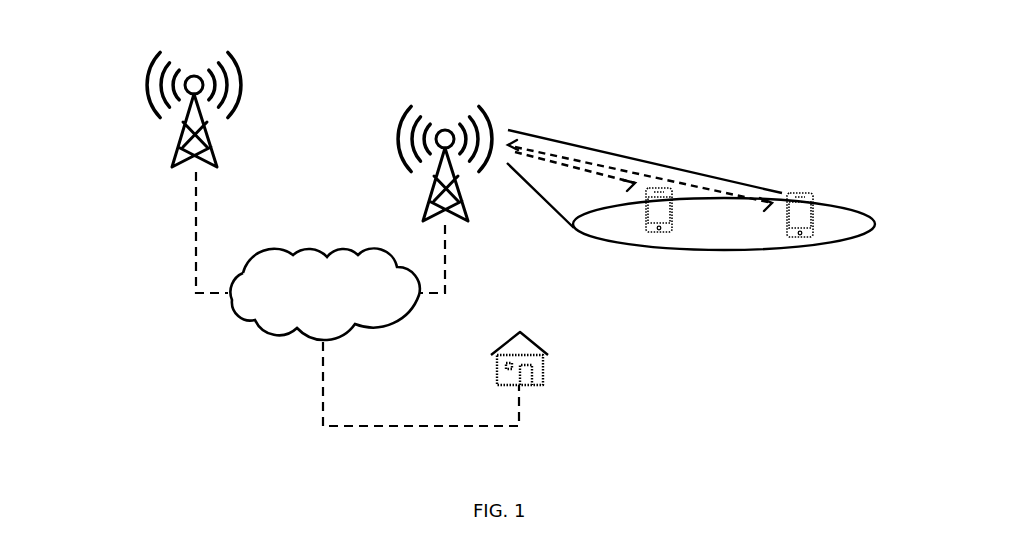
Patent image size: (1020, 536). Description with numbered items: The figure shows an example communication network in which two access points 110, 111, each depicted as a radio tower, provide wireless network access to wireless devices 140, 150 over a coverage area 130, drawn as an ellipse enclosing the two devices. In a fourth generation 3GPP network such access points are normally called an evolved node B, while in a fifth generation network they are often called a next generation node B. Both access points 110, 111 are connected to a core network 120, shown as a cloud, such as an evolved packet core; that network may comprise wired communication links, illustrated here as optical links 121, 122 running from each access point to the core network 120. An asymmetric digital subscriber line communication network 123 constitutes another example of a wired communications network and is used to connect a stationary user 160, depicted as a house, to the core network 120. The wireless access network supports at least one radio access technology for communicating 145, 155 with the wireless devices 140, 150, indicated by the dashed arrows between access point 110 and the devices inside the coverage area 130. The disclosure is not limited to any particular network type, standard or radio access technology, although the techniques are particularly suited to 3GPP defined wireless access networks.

The access point 110 is at (430, 195).
The access point 111 is at (180, 140).
The core network 120 is at (324, 294).
The optical link 121 is at (457, 263).
The optical link 122 is at (186, 232).
The ADSL communication network 123 is at (421, 384).
The coverage area 130 is at (858, 212).
The wireless device 140 is at (787, 237).
The communicating 145 is at (697, 178).
The wireless device 150 is at (647, 232).
The communicating 155 is at (572, 158).
The stationary user 160 is at (543, 385).